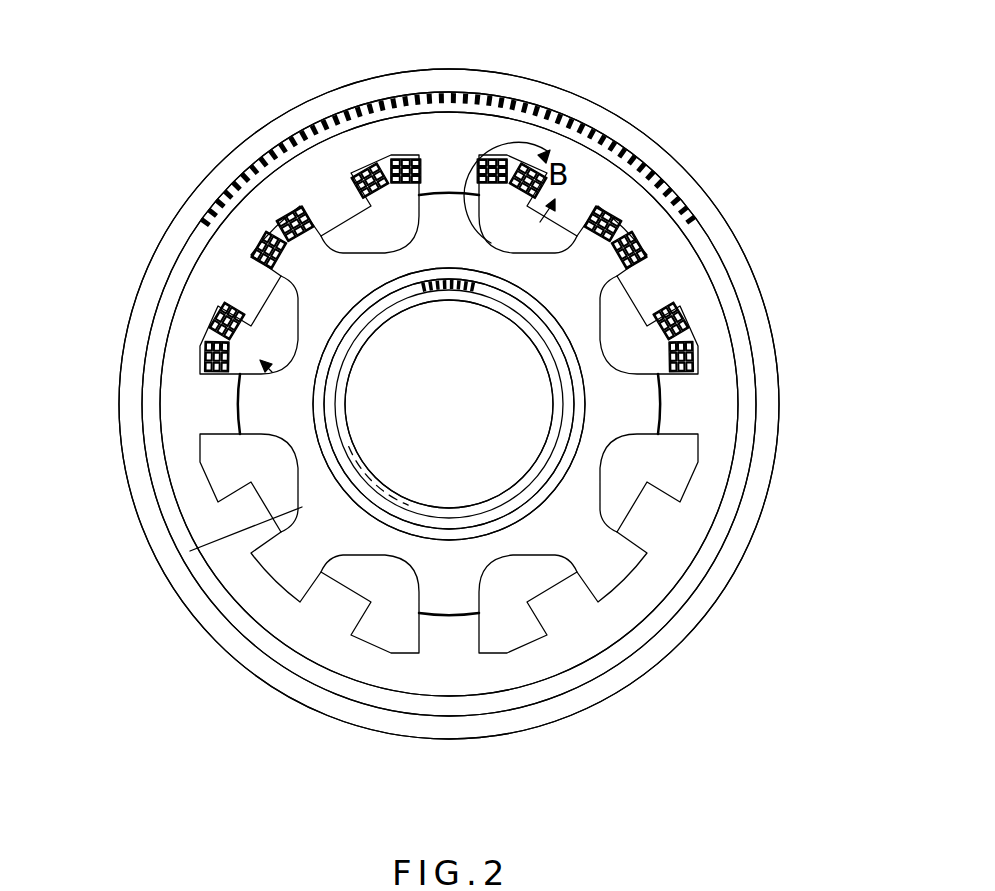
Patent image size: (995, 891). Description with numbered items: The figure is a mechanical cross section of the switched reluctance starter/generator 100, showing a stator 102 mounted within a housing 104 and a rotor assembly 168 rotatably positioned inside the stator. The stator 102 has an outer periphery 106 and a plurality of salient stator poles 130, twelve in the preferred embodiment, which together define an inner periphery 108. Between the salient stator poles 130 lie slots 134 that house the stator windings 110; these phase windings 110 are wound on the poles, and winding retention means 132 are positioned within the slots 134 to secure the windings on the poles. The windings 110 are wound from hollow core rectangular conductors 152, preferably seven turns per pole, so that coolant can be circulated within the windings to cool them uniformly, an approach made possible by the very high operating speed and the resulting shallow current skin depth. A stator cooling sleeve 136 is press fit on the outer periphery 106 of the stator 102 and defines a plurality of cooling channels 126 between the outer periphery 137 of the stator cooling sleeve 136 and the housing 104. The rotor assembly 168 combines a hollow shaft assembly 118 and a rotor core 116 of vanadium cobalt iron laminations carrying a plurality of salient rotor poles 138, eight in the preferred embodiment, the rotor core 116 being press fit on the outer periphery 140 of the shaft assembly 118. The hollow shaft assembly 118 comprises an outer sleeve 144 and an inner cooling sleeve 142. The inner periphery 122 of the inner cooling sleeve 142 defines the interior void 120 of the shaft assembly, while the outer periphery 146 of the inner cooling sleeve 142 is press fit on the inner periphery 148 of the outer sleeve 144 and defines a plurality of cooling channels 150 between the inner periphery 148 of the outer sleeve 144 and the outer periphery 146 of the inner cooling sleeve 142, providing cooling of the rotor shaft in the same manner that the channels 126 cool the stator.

The switched reluctance starter/generator 100 is at (324, 741).
The stator 102 is at (285, 185).
The housing 104 is at (528, 95).
The outer periphery 106 is at (225, 198).
The inner periphery 108 is at (340, 240).
The stator windings 110 is at (597, 200).
The rotor core 116 is at (600, 350).
The hollow shaft assembly 118 is at (594, 460).
The interior void 120 is at (505, 464).
The inner periphery 122 is at (383, 320).
The cooling channels 126 is at (660, 222).
The salient stator poles 130 is at (250, 287).
The winding retention means 132 is at (345, 450).
The slots 134 is at (283, 573).
The stator cooling sleeve 136 is at (167, 300).
The outer periphery 137 is at (145, 384).
The salient rotor poles 138 is at (612, 600).
The outer periphery 140 is at (508, 360).
The inner cooling sleeve 142 is at (255, 553).
The outer sleeve 144 is at (578, 398).
The outer periphery 146 is at (333, 350).
The inner periphery 148 is at (530, 310).
The cooling channels 150 is at (466, 290).
The hollow core rectangular conductors 152 is at (238, 374).
The rotor assembly 168 is at (518, 612).